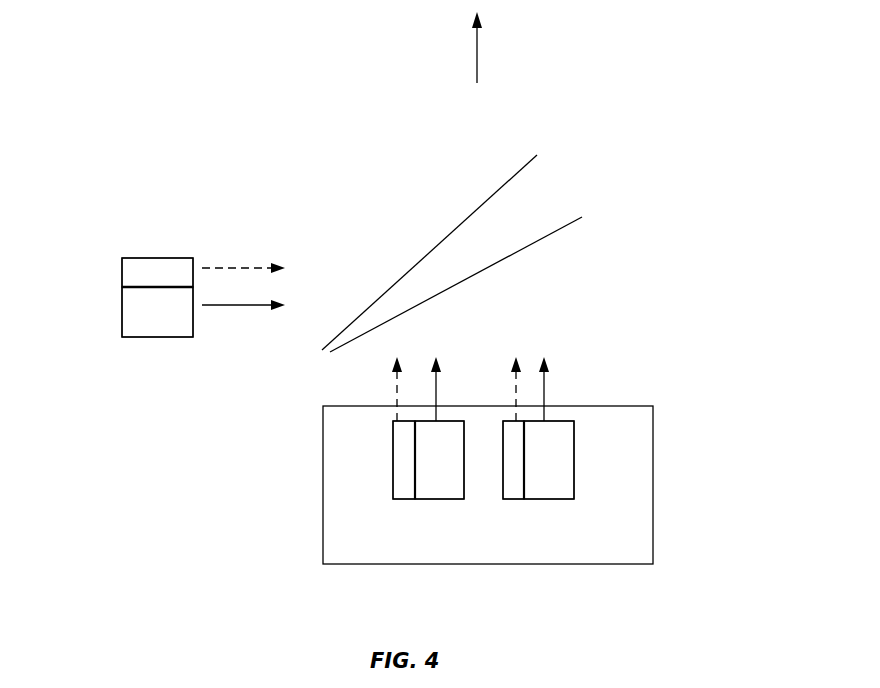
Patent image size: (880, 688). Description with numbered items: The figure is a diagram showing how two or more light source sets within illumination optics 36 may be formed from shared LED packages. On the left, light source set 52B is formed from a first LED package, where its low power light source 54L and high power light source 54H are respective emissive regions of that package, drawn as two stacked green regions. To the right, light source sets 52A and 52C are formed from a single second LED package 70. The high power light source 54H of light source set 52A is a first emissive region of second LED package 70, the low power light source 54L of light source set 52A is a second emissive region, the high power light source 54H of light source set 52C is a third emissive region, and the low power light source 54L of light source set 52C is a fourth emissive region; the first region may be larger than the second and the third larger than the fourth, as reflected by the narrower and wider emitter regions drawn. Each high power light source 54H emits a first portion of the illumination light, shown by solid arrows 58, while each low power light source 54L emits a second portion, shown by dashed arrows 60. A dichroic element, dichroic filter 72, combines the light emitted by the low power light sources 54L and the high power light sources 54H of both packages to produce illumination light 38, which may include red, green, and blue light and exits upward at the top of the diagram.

The illumination light 38 is at (477, 58).
The dichroic filter 72 is at (606, 142).
The illumination optics 36 is at (723, 118).
The light source set 52B is at (108, 258).
The light source set 52A is at (465, 572).
The light source set 52C is at (587, 572).
The low power light source 54L is at (155, 257).
The high power light source 54H is at (158, 337).
The dashed arrows 60 is at (235, 267).
The arrows 58 is at (237, 307).
The second LED package 70 is at (653, 485).